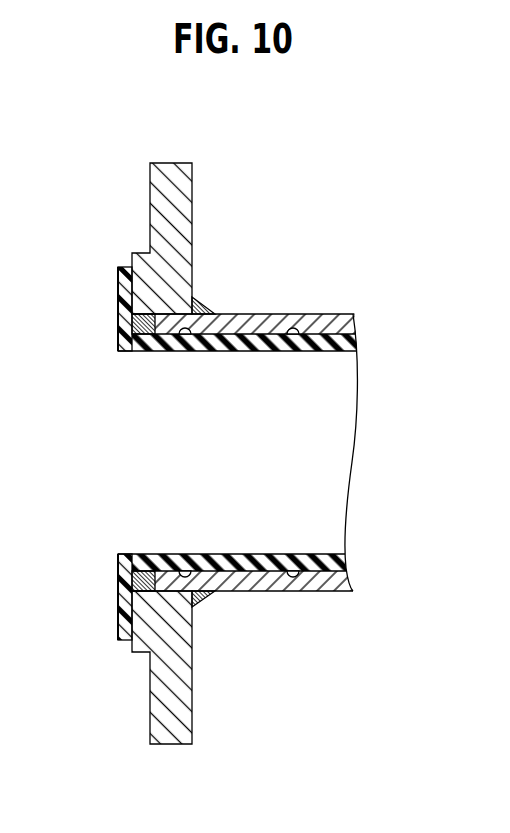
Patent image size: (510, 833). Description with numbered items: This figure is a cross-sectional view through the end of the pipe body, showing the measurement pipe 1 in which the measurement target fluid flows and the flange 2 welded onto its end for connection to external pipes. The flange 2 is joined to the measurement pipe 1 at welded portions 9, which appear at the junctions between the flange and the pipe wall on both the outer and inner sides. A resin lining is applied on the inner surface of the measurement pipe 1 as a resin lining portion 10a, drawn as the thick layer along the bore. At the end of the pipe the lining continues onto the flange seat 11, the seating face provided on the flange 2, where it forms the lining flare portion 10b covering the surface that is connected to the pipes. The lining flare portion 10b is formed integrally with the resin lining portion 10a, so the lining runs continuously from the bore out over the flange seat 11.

The measurement pipe 1 is at (333, 314).
The flange 2 is at (193, 181).
The welded portion 9 is at (198, 309).
The resin lining portion 10a is at (251, 554).
The lining flare portion 10b is at (118, 595).
The flange seat 11 is at (126, 646).